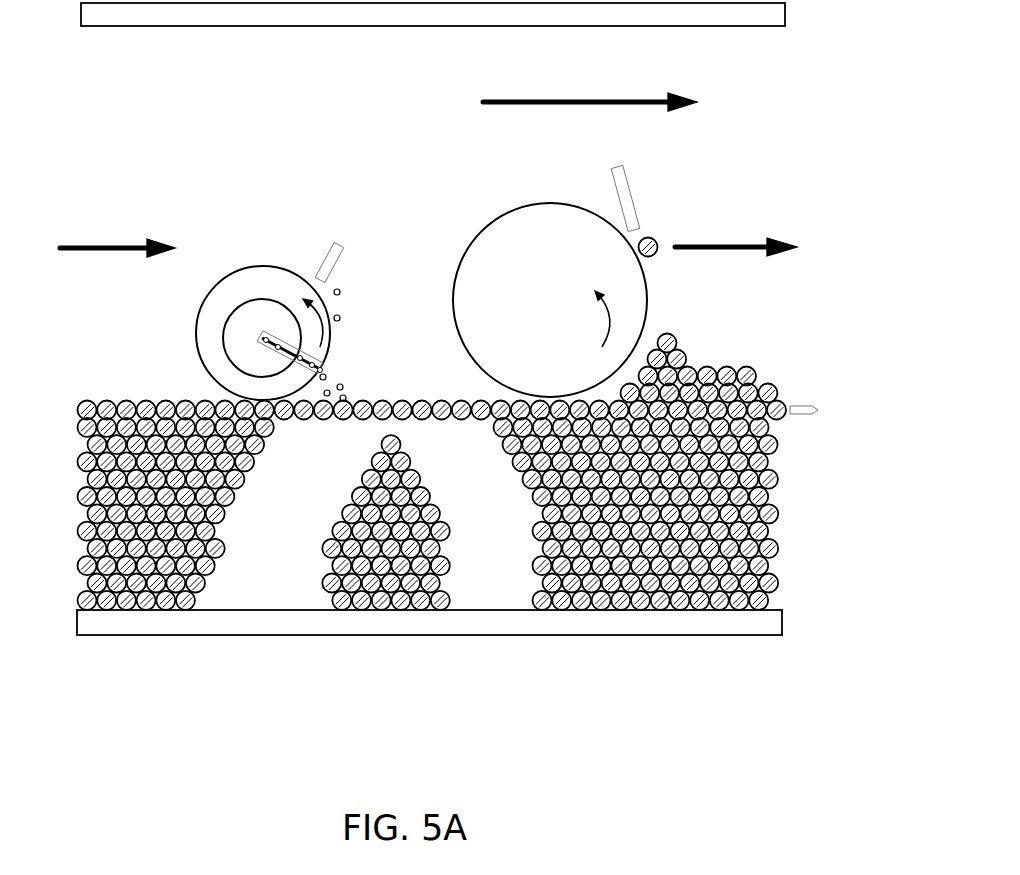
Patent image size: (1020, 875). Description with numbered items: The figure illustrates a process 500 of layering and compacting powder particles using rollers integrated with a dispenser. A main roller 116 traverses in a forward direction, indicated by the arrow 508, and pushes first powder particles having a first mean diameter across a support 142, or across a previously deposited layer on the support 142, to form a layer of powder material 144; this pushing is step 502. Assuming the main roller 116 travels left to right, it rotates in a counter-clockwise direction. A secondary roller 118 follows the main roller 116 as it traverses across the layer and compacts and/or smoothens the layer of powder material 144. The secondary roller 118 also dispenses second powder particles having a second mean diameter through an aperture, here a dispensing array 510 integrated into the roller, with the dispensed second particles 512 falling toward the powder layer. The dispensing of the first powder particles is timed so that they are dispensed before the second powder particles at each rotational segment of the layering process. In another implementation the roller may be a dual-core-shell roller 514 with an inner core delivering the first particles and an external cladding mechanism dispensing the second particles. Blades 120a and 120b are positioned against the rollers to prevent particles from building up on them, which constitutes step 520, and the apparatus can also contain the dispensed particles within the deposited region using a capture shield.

The process 500 is at (110, 122).
The secondary roller 118 is at (197, 333).
The dual-core-shell roller 514 is at (190, 382).
The dispensing array 510 is at (327, 363).
The dispensed beads 512 is at (346, 398).
The blade 120a is at (333, 263).
The blade 120b is at (635, 203).
The main roller 116 is at (583, 332).
The step of preventing particle build-up 520 is at (660, 244).
The arrow 508 is at (728, 234).
The step of pushing first powder particles 502 is at (690, 362).
The layer of powder material 144 is at (818, 410).
The support 142 is at (520, 638).